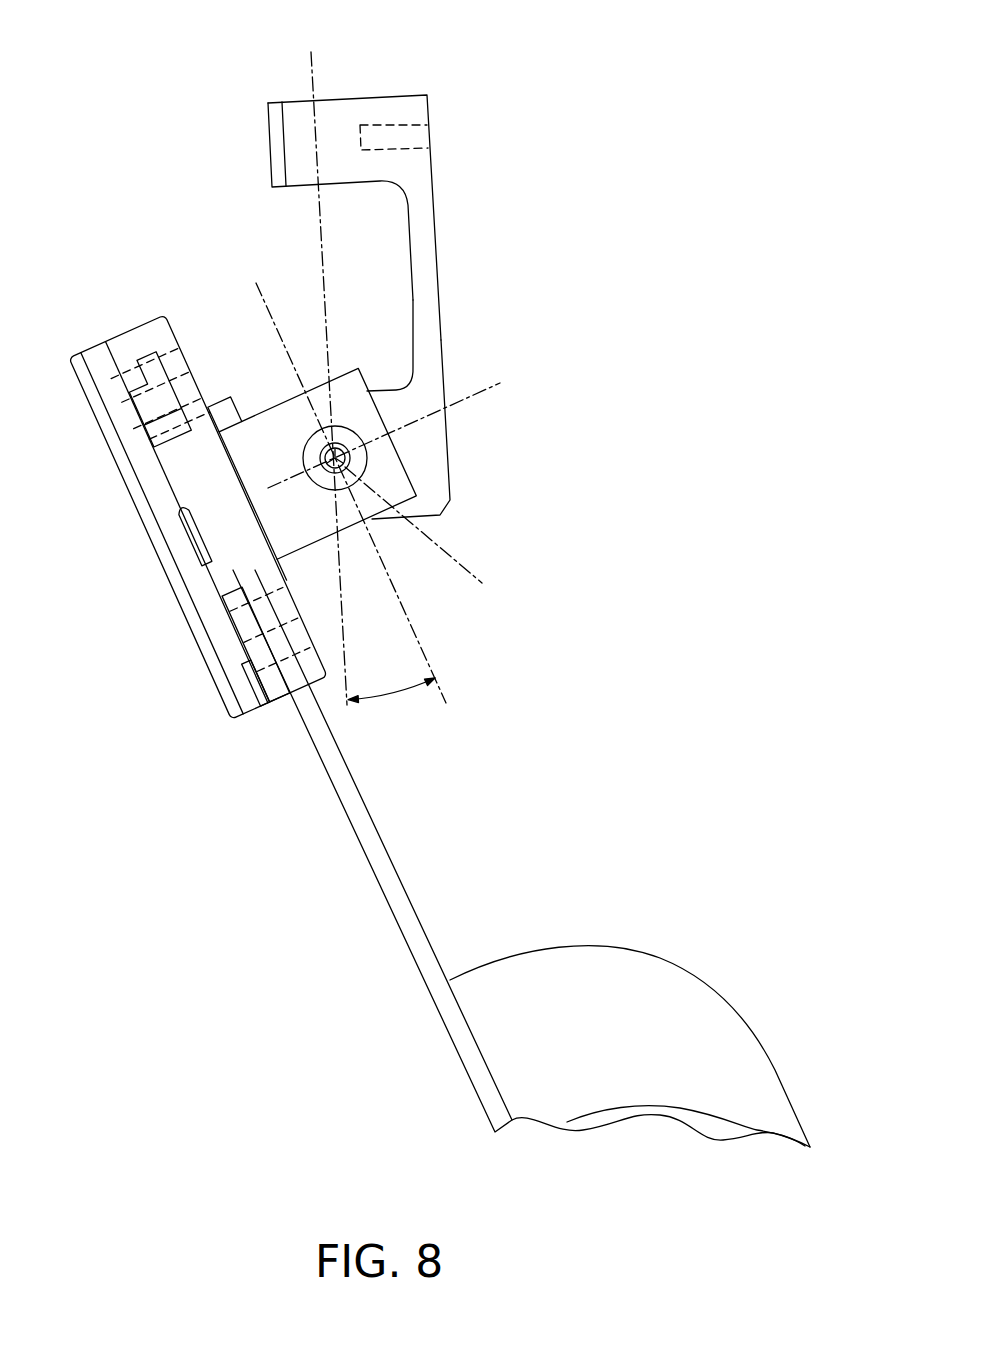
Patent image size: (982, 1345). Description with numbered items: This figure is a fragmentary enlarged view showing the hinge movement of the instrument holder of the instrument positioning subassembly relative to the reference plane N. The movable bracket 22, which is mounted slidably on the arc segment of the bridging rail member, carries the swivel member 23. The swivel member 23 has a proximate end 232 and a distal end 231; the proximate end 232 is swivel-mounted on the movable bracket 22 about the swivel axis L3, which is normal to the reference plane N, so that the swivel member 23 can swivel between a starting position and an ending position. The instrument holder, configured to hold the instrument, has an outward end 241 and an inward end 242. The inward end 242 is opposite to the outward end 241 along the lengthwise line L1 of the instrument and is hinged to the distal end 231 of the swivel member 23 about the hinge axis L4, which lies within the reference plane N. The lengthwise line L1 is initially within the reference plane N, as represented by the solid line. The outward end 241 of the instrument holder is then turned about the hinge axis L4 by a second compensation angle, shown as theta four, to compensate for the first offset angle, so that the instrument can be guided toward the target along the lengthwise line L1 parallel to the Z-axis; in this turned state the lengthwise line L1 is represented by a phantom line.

The movable bracket 22 is at (145, 338).
The swivel member 23 is at (408, 418).
The distal end 231 is at (335, 458).
The proximate end 232 is at (268, 470).
The outward end 241 is at (337, 118).
The inward end 242 is at (437, 503).
The lengthwise line L1 is at (322, 361).
The swivel axis L3 is at (402, 426).
The hinge axis L4 is at (431, 534).
The reference plane N is at (425, 648).